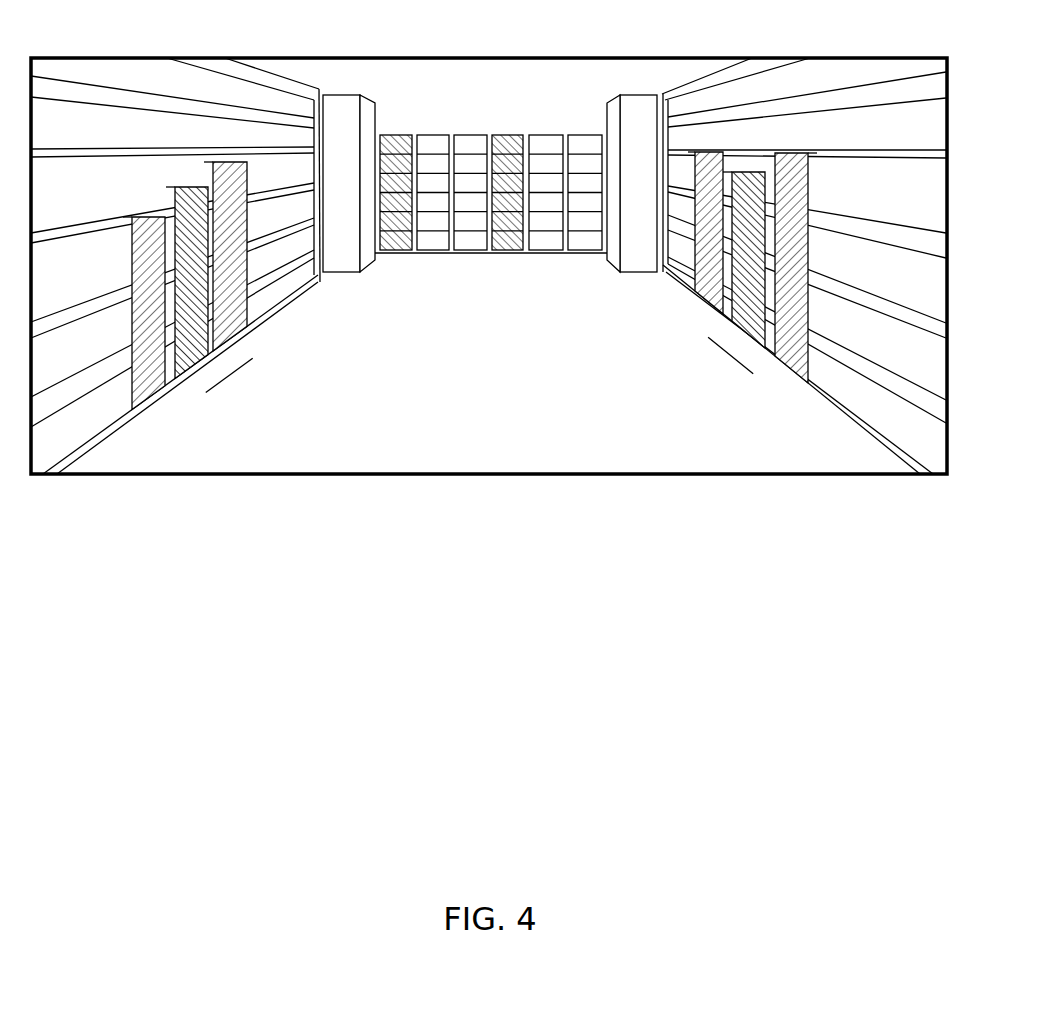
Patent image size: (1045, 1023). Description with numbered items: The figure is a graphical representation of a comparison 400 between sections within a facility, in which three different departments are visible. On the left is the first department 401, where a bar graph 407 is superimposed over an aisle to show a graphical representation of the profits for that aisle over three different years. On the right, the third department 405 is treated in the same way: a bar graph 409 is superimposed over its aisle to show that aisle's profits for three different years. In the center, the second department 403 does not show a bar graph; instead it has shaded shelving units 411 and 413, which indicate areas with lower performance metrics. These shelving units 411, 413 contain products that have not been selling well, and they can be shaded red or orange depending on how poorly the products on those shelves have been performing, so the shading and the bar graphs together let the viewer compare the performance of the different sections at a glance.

The comparison 400 is at (238, 46).
The first department 401 is at (178, 469).
The second department 403 is at (490, 189).
The third department 405 is at (768, 469).
The bar graph 407 is at (258, 362).
The bar graph 409 is at (703, 350).
The shaded shelving unit 411 is at (388, 252).
The shaded shelving unit 413 is at (508, 252).